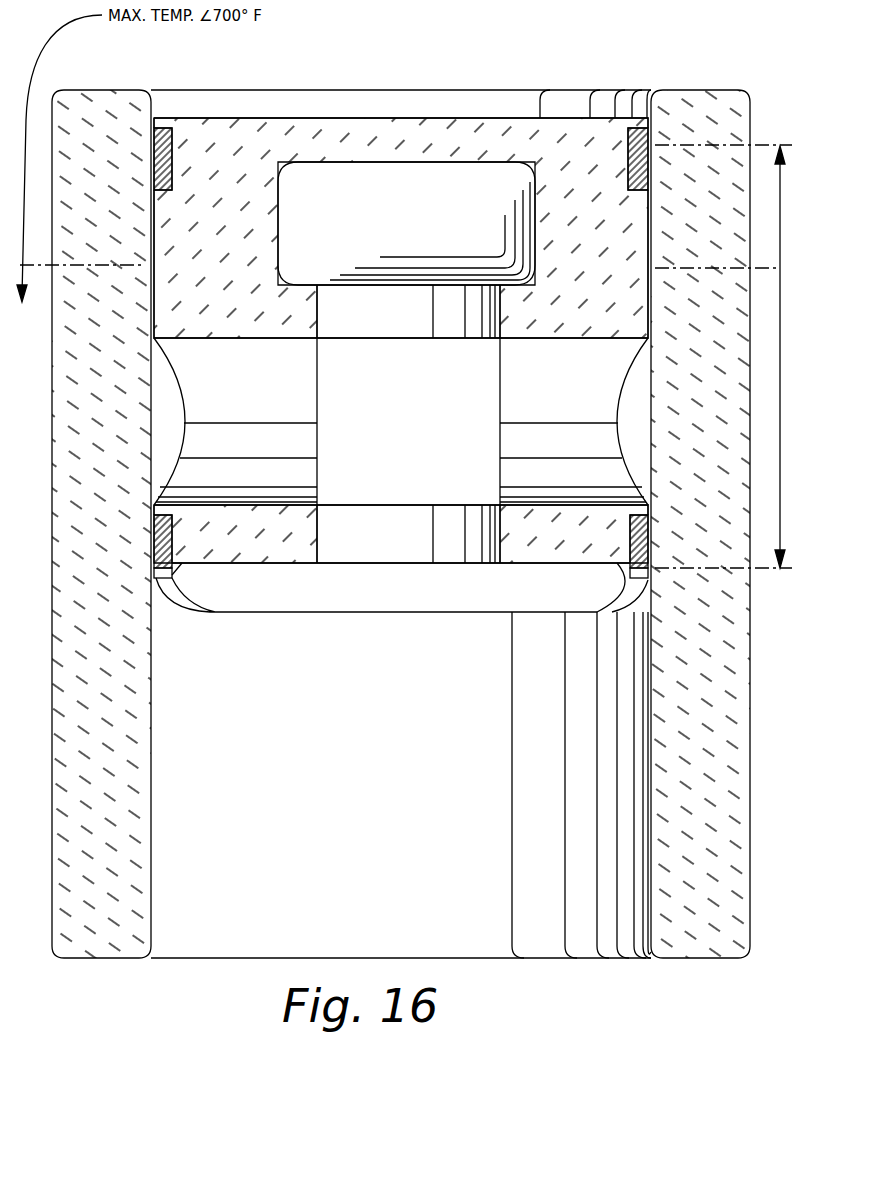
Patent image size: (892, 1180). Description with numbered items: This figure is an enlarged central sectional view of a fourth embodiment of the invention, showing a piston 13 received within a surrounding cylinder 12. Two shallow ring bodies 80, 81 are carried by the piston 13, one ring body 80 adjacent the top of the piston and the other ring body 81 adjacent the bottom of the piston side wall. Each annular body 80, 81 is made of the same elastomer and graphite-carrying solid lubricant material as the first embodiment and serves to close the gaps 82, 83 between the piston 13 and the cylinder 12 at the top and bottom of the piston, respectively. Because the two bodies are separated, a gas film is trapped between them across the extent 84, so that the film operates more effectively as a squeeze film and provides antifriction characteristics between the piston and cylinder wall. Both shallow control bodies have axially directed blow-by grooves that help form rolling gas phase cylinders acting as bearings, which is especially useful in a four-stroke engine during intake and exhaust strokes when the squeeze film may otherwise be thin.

The housing 12 is at (718, 118).
The piston body 13 is at (484, 140).
The shallow ring body 80 is at (658, 160).
The shallow ring body 81 is at (640, 548).
The gap 82 is at (207, 202).
The gap 83 is at (207, 509).
The extent 84 is at (780, 393).